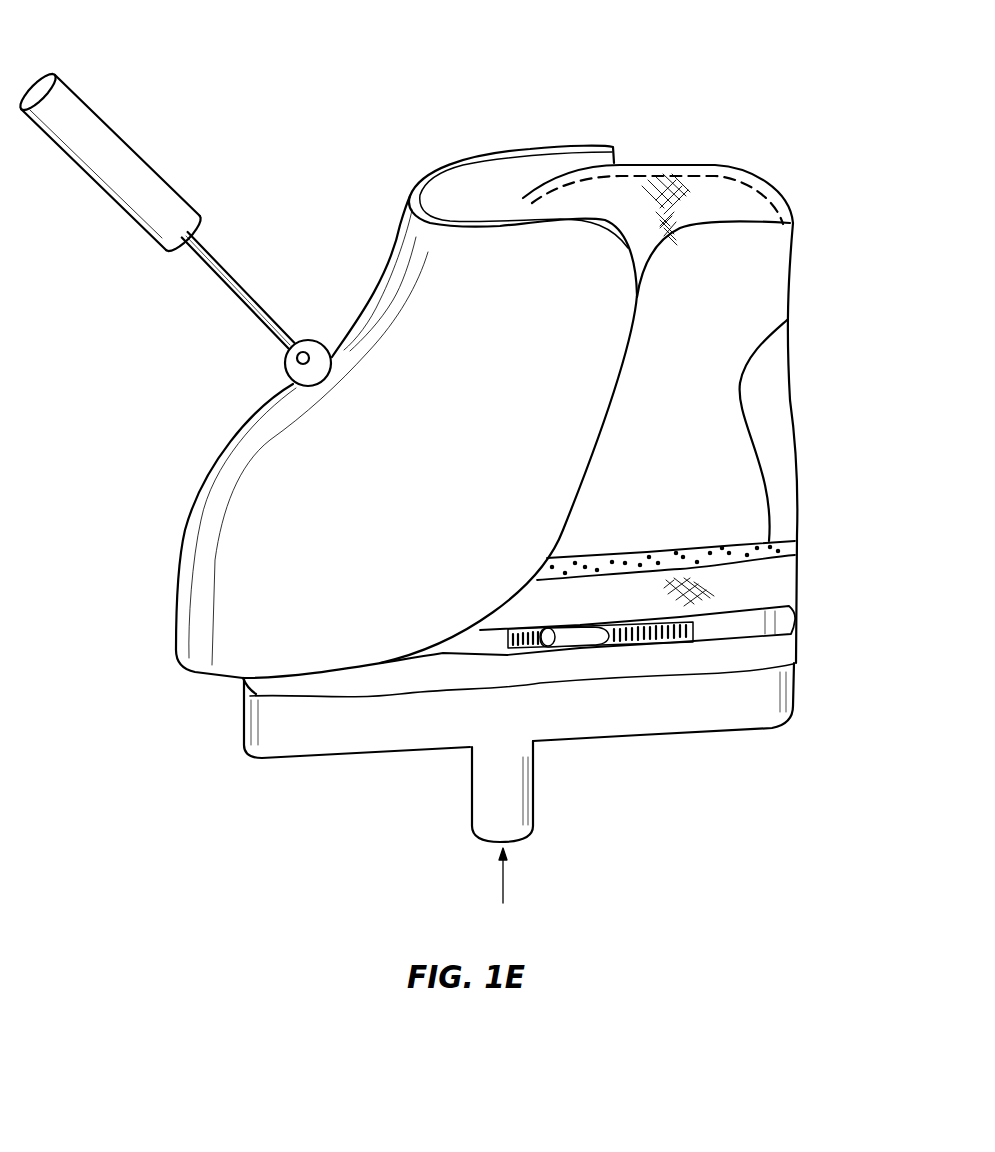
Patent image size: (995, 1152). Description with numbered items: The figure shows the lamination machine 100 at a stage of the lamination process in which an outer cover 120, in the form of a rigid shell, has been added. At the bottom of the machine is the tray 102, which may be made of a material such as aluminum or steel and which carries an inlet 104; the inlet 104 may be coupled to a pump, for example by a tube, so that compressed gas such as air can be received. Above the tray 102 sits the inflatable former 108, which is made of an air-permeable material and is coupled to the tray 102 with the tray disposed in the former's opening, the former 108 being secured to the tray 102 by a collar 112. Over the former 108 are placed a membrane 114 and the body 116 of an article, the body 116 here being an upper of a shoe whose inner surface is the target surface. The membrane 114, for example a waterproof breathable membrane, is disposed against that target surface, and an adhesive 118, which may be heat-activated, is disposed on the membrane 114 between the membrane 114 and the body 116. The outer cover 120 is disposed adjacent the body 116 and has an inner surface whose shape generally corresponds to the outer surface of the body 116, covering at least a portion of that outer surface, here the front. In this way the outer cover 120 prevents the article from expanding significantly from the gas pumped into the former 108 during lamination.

The lamination machine 100 is at (267, 106).
The tray 102 is at (793, 700).
The inlet 104 is at (513, 828).
The inflatable former 108 is at (788, 200).
The collar 112 is at (796, 625).
The membrane 114 is at (797, 545).
The body 116 is at (728, 344).
The adhesive 118 is at (792, 569).
The outer cover 120 is at (243, 466).